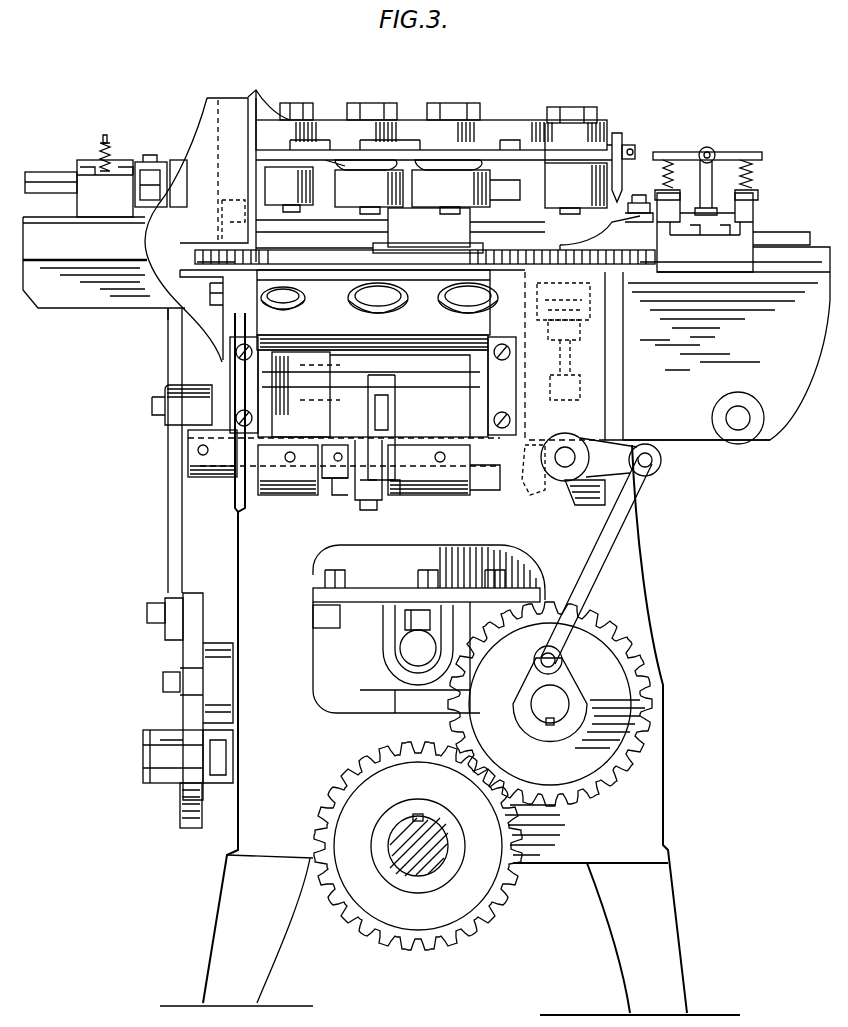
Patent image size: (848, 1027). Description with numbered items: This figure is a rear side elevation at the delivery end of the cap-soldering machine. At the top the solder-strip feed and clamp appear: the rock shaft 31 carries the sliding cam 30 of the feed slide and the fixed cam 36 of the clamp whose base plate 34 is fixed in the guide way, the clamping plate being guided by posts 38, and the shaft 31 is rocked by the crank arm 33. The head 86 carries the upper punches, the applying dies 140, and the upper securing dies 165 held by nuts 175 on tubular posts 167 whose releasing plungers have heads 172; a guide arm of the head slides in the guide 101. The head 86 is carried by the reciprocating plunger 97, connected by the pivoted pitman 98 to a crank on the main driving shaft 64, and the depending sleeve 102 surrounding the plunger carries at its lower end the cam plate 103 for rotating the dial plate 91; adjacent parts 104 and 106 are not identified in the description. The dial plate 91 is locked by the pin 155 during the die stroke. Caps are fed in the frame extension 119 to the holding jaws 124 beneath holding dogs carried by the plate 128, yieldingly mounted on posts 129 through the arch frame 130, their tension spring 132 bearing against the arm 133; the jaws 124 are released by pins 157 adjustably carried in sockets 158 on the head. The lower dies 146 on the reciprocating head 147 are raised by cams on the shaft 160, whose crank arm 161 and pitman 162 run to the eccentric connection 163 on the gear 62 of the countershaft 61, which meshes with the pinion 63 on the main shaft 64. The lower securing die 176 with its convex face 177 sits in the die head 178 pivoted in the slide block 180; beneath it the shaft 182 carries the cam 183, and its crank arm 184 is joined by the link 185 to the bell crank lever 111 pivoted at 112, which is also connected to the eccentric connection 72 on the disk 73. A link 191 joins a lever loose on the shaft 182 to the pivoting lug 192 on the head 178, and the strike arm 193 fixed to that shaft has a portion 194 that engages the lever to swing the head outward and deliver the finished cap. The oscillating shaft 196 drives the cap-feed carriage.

The cam 30 is at (180, 160).
The rock shaft 31 is at (42, 172).
The crank arm 33 is at (150, 162).
The base plate 34 is at (105, 188).
The cam 36 is at (113, 152).
The posts 38 is at (105, 135).
The countershaft 61 is at (562, 702).
The driving pinion 62 is at (550, 704).
The pinion 63 is at (356, 765).
The main driving shaft 64 is at (388, 838).
The eccentric connection 72 is at (143, 752).
The disk 73 is at (180, 806).
The head plate 86 is at (416, 122).
The dial plate 91 is at (173, 269).
The plunger 97 is at (365, 635).
The pitman 98 is at (395, 690).
The guide 101 is at (213, 106).
The depending sleeve 102 is at (429, 572).
The cam plate 103 is at (313, 592).
The stop 104 is at (320, 615).
The lug 106 is at (248, 96).
The bell crank lever 111 is at (195, 651).
The pivot 112 is at (163, 688).
The frame extension 119 is at (696, 410).
The holding jaws 124 is at (545, 243).
The plate 128 is at (786, 240).
The posts 129 is at (650, 200).
The arch frame 130 is at (705, 232).
The tension spring 132 is at (756, 172).
The arm 133 is at (715, 152).
The applying dies 140 is at (576, 168).
The lower dies 146 is at (565, 356).
The reciprocating head 147 is at (588, 400).
The pin 155 is at (222, 207).
The releasing pins 157 is at (616, 132).
The sockets 158 is at (624, 145).
The shaft 160 is at (565, 465).
The crank arm 161 is at (613, 471).
The pitman 162 is at (612, 540).
The eccentric connection 163 is at (534, 661).
The upper securing dies 165 is at (392, 190).
The tubular securing post 167 is at (345, 163).
The head 172 is at (462, 165).
The nuts 175 is at (356, 103).
The lower securing die 176 is at (423, 298).
The convex face 177 is at (303, 296).
The die head 178 is at (373, 310).
The slide block 180 is at (373, 387).
The shaft 182 is at (435, 487).
The cam 183 is at (344, 466).
The crank arm 184 is at (195, 430).
The link 185 is at (166, 519).
The link 191 is at (366, 447).
The pivoting lug 192 is at (390, 398).
The strike arm 193 is at (335, 480).
The portion 194 is at (366, 502).
The shaft 196 is at (745, 418).